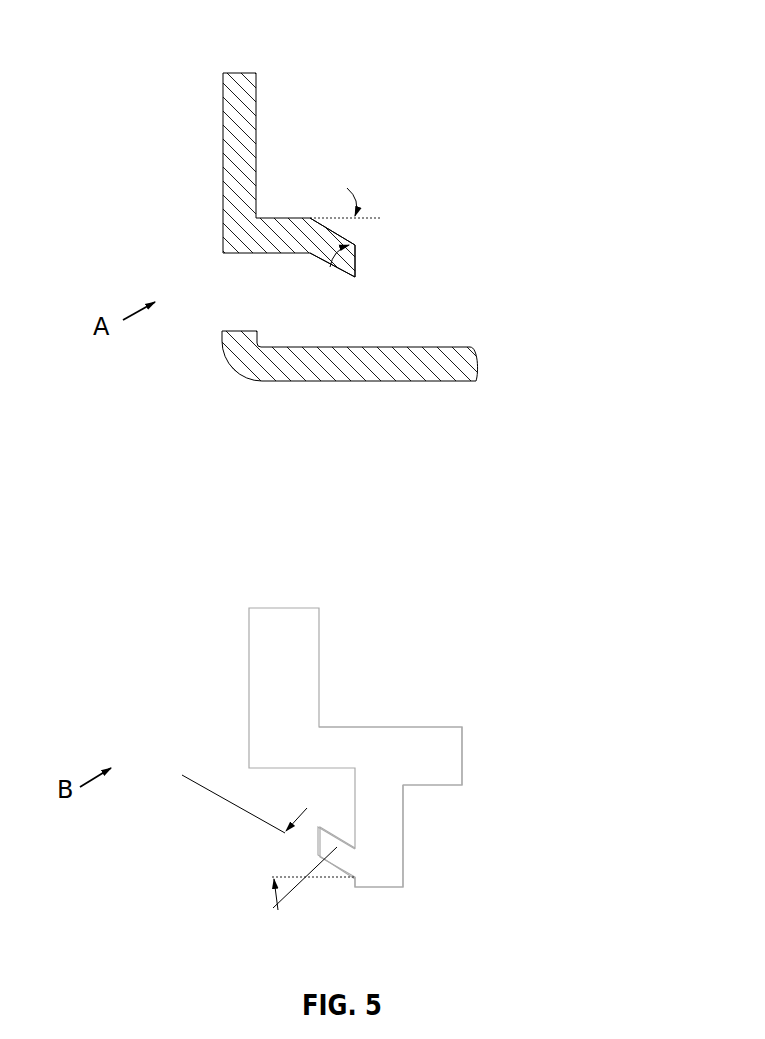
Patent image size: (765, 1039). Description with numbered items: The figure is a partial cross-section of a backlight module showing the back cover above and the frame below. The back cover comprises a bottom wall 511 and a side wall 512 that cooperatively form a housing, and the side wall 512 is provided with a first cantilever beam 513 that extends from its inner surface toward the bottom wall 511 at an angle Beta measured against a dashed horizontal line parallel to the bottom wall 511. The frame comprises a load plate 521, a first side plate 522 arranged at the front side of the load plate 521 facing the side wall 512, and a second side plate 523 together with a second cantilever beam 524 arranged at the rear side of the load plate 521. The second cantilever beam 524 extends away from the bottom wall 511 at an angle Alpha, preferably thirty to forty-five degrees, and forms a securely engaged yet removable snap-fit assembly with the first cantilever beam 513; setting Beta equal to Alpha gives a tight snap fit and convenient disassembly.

The bottom wall 511 is at (422, 365).
The side wall 512 is at (232, 157).
The first cantilever beam 513 is at (347, 198).
The load plate 521 is at (393, 727).
The first side plate 522 is at (270, 653).
The second side plate 523 is at (403, 824).
The second cantilever beam 524 is at (282, 903).